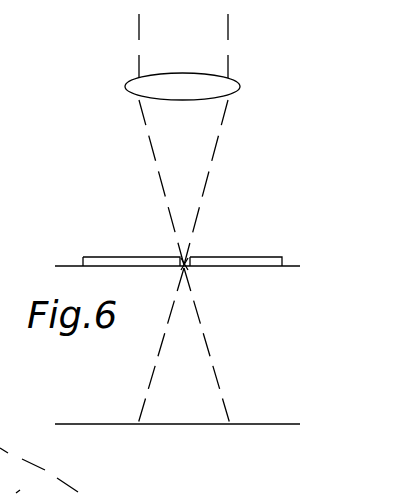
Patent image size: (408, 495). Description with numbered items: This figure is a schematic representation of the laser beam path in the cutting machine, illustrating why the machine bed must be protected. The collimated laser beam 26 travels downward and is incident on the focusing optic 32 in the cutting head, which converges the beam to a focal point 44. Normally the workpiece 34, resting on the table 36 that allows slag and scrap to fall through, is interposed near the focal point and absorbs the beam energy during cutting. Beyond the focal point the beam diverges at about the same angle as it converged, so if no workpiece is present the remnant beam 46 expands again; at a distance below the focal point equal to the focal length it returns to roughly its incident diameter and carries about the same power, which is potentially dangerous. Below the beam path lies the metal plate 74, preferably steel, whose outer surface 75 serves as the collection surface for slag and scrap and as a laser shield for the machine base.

The collimated laser beam 26 is at (228, 35).
The focusing optic 32 is at (225, 87).
The workpiece 34 is at (243, 257).
The table 36 is at (292, 266).
The focal point 44 is at (188, 249).
The remnant beam 46 is at (187, 390).
The outer surface 75 is at (262, 424).
The metal plate 74 is at (39, 470).